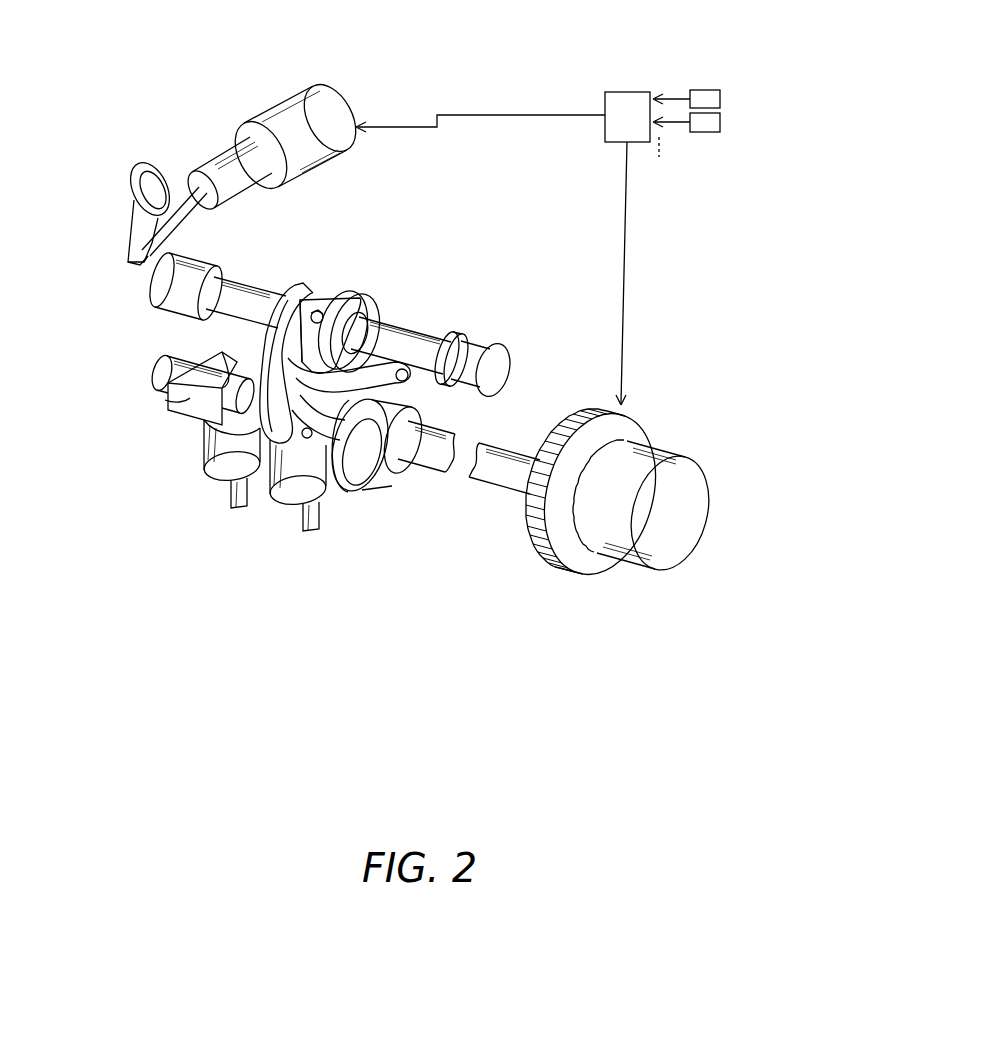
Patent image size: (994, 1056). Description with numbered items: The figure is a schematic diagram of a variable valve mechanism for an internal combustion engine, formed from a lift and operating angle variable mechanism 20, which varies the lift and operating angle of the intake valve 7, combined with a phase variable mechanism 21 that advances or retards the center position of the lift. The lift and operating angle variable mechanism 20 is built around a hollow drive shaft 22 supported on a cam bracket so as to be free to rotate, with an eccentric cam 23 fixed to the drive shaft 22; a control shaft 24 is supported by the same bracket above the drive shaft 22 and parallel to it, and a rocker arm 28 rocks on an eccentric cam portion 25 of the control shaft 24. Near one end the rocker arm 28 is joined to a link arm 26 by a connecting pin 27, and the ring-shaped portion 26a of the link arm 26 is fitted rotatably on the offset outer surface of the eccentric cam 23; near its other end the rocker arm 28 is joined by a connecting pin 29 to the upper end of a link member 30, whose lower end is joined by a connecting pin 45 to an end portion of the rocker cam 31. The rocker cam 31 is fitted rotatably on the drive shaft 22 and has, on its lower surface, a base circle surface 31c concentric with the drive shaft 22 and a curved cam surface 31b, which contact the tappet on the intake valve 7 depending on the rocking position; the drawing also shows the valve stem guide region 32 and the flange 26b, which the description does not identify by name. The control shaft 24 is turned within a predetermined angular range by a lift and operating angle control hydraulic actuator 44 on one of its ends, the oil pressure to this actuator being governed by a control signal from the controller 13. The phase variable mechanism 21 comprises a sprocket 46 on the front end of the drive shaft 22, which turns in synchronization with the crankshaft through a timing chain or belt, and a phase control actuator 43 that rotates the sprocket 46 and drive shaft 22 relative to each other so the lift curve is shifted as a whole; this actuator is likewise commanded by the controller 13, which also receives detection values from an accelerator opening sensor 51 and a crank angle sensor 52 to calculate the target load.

The intake valve 7 is at (242, 509).
The controller 13 is at (620, 92).
The lift and operating angle variable mechanism 20 is at (446, 227).
The phase variable mechanism 21 is at (680, 399).
The drive shaft 22 is at (437, 465).
The eccentric cam 23 is at (352, 482).
The control shaft 24 is at (408, 332).
The eccentric cam portion 25 is at (393, 322).
The link arm 26 is at (327, 482).
The ring-shaped portion 26a is at (362, 490).
The flange portion 26b is at (418, 423).
The connecting pin 27 is at (408, 380).
The rocker arm 28 is at (343, 297).
The connecting pin 29 is at (320, 292).
The link member 30 is at (277, 347).
The rocker cam 31 is at (187, 413).
The cam surface 31b is at (173, 402).
The base circle surface 31c is at (180, 385).
The valve lifter 32 is at (207, 477).
The phase control actuator 43 is at (683, 543).
The lift and operating angle control hydraulic actuator 44 is at (305, 98).
The connecting pin 45 is at (370, 482).
The sprocket 46 is at (592, 577).
The accelerator opening sensor 51 is at (722, 99).
The crank angle sensor 52 is at (722, 122).